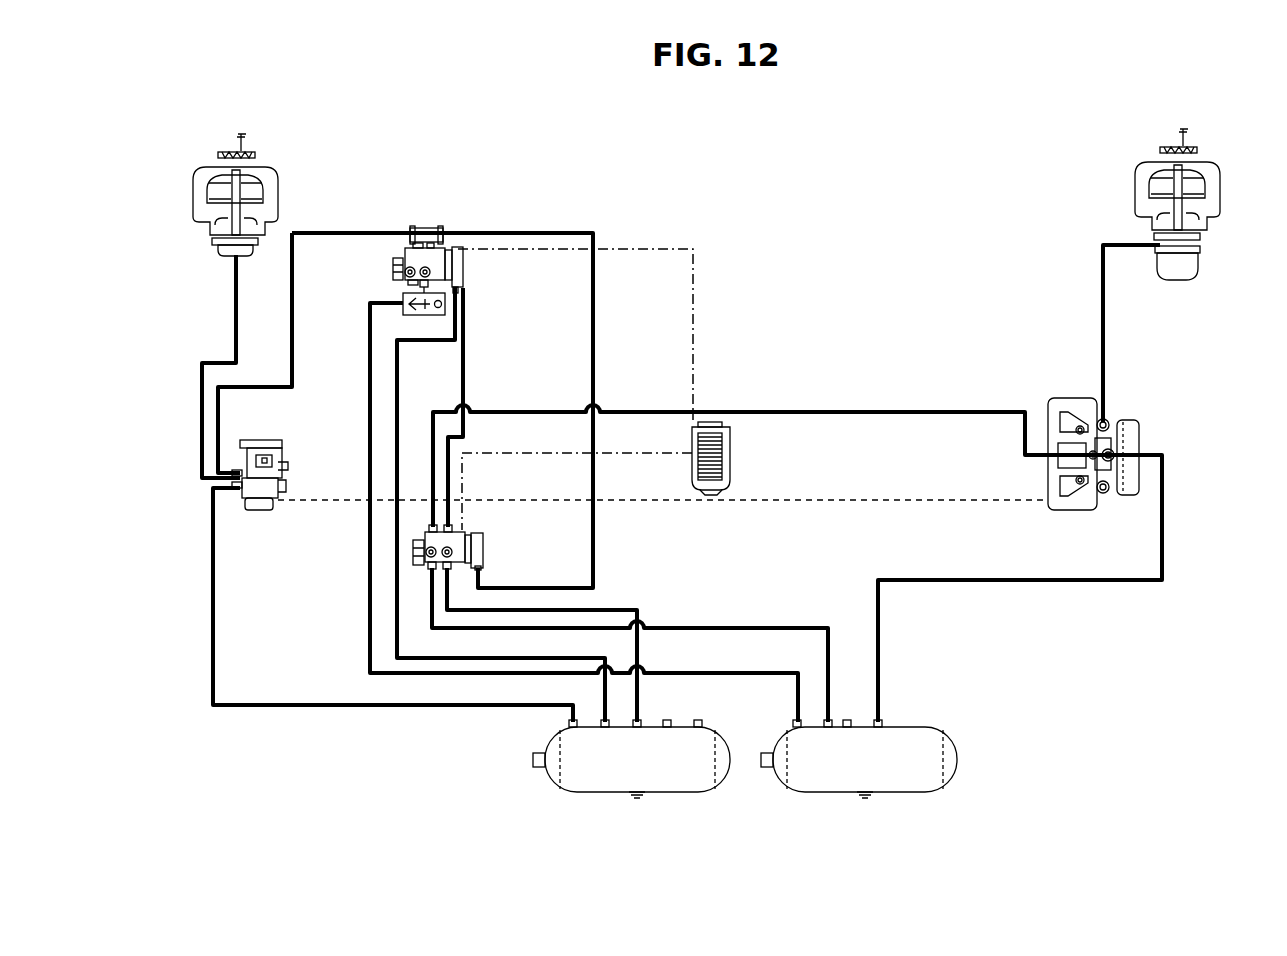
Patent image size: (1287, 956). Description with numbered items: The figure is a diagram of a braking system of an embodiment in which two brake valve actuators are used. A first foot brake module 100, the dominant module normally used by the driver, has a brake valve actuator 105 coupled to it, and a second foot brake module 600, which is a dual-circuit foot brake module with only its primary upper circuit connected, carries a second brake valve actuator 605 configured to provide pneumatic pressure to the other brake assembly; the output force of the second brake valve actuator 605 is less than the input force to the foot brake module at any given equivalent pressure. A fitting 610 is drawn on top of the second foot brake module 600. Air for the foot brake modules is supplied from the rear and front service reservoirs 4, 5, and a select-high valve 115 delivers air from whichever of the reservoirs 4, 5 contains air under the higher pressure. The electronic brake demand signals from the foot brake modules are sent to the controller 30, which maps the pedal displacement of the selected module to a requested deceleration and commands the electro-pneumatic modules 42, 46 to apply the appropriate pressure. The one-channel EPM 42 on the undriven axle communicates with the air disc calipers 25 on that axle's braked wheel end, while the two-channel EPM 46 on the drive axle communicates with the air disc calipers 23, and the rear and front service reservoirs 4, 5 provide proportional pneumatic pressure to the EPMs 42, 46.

The air disc calipers 25 is at (196, 186).
The air disc calipers 23 is at (1222, 170).
The electro-pneumatic module 42 is at (286, 468).
The electro-pneumatic module 46 is at (1142, 428).
The second foot brake module 600 is at (396, 253).
The pipe fitting of control valve 610 is at (440, 228).
The second brake valve actuator 605 is at (466, 270).
The select-high valve 115 is at (418, 316).
The first foot brake module 100 is at (413, 546).
The brake valve actuator 105 is at (486, 544).
The controller 30 is at (730, 427).
The front service reservoir 5 is at (700, 793).
The rear service reservoir 4 is at (928, 793).